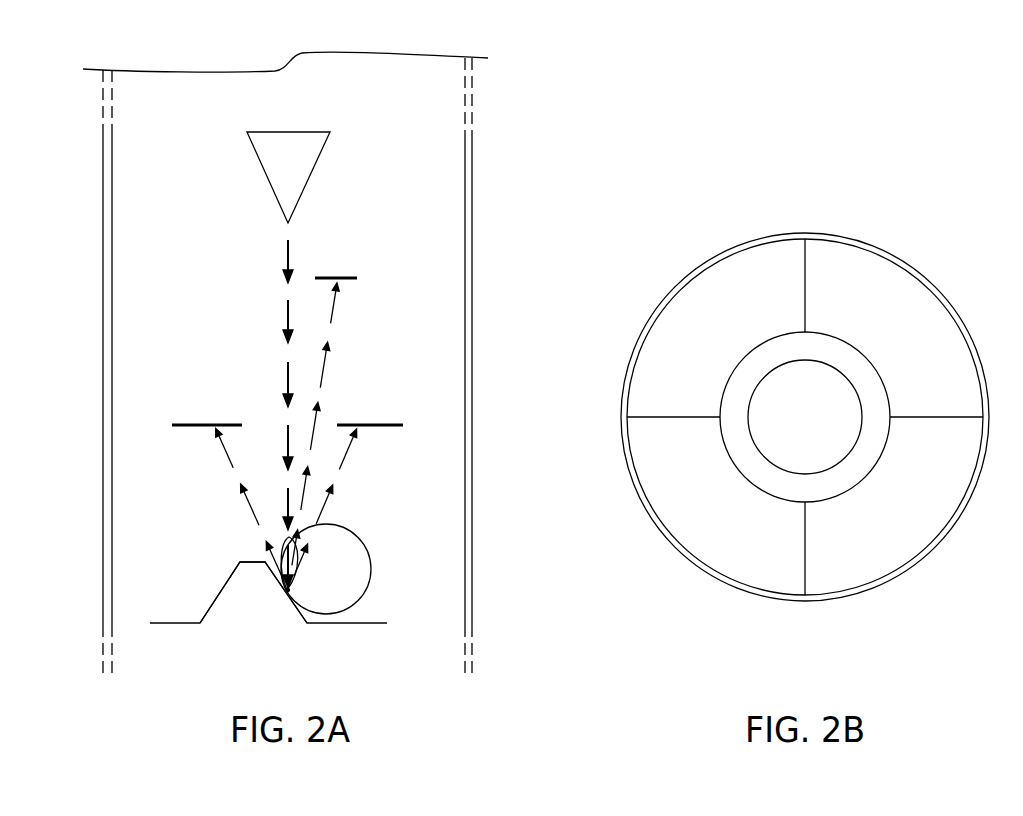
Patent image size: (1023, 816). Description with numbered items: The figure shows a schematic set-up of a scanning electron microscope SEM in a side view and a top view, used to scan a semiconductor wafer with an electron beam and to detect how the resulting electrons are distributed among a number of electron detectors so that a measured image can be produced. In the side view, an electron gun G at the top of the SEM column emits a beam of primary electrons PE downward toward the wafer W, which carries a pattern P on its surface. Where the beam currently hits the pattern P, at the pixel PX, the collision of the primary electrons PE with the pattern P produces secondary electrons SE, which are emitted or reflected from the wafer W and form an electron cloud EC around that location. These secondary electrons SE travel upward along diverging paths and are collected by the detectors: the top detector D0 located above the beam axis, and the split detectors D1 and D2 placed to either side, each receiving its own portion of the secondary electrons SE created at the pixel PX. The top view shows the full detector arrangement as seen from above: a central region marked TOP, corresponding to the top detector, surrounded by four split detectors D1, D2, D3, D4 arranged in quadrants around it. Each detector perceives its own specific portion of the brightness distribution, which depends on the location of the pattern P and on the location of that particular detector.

In FIG. 2A, the scanning electron microscope SEM is at (472, 150).
In FIG. 2A, the electron gun G is at (288, 177).
In FIG. 2A, the primary electrons PE is at (257, 414).
In FIG. 2A, the top detector D0 is at (336, 265).
In FIG. 2A, the split detector D1 is at (207, 411).
In FIG. 2B, the split detector D1 is at (716, 328).
In FIG. 2A, the split detector D2 is at (370, 411).
In FIG. 2B, the split detector D2 is at (894, 328).
In FIG. 2B, the split detector D3 is at (894, 506).
In FIG. 2B, the split detector D4 is at (716, 506).
In FIG. 2A, the secondary electrons SE is at (299, 432).
In FIG. 2A, the electron cloud EC is at (326, 569).
In FIG. 2A, the pattern P is at (222, 588).
In FIG. 2A, the wafer W is at (268, 612).
In FIG. 2A, the pixel PX is at (288, 590).
In FIG. 2B, the top detector TOP is at (805, 417).